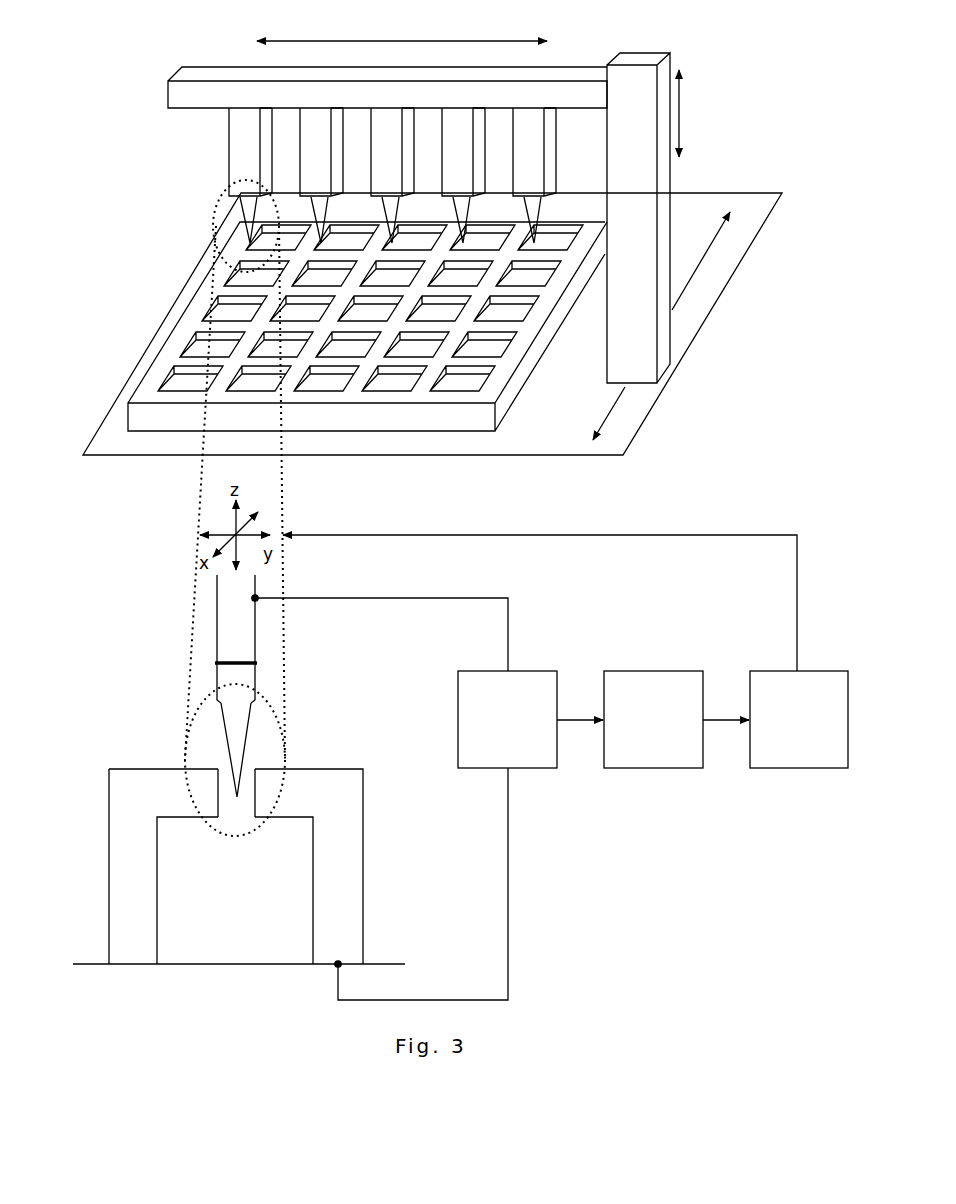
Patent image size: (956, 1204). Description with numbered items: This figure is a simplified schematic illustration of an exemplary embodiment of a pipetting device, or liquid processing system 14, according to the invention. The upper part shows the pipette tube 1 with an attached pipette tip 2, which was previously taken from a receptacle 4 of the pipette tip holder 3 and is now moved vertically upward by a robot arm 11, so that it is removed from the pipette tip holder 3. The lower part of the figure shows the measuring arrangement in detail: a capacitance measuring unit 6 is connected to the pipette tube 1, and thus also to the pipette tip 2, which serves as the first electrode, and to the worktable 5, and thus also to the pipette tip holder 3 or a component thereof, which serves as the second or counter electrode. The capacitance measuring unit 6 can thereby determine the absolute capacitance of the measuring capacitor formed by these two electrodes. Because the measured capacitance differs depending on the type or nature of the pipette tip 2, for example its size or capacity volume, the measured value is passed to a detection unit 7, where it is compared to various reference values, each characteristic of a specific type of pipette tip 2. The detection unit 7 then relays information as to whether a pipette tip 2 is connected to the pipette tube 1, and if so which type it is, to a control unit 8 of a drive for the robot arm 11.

The pipette tube 1 is at (247, 182).
The pipette tip 2 is at (238, 210).
The pipette tip holder 3 is at (107, 842).
The receptacle 4 is at (248, 770).
The worktable 5 is at (90, 962).
The capacitance measuring unit 6 is at (533, 775).
The detection unit 7 is at (657, 775).
The control unit 8 is at (798, 775).
The robot arm 11 is at (661, 246).
The liquid processing system 14 is at (737, 67).